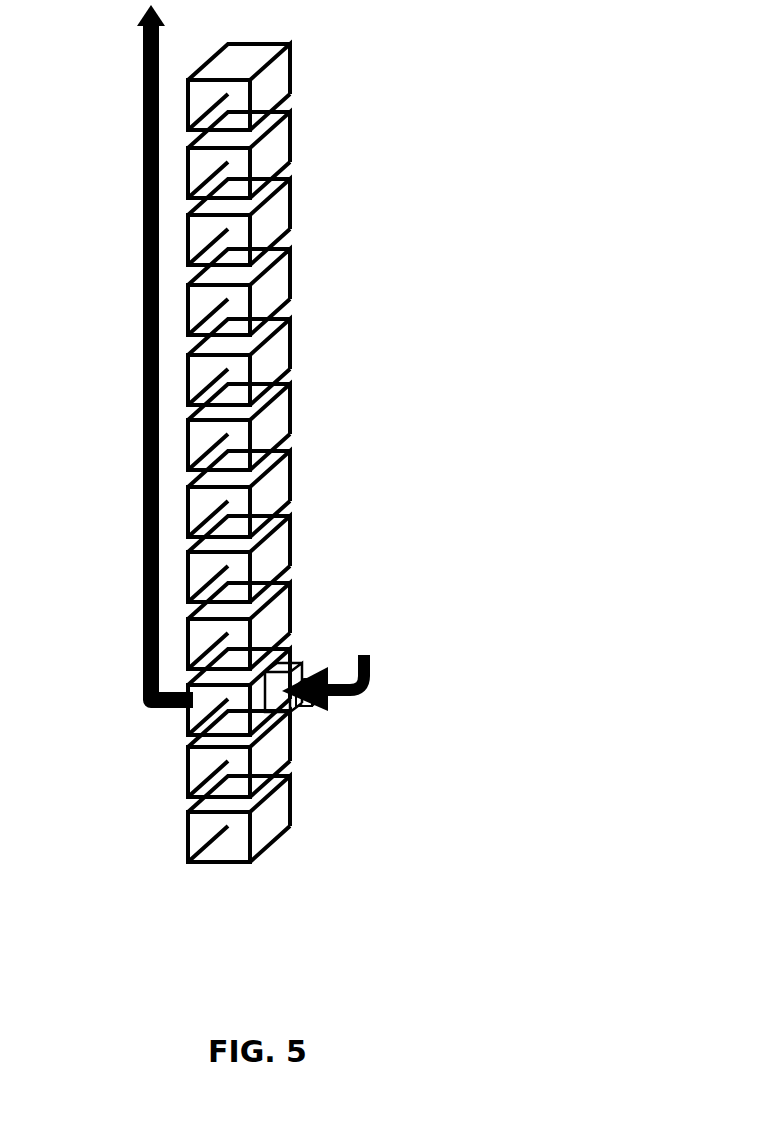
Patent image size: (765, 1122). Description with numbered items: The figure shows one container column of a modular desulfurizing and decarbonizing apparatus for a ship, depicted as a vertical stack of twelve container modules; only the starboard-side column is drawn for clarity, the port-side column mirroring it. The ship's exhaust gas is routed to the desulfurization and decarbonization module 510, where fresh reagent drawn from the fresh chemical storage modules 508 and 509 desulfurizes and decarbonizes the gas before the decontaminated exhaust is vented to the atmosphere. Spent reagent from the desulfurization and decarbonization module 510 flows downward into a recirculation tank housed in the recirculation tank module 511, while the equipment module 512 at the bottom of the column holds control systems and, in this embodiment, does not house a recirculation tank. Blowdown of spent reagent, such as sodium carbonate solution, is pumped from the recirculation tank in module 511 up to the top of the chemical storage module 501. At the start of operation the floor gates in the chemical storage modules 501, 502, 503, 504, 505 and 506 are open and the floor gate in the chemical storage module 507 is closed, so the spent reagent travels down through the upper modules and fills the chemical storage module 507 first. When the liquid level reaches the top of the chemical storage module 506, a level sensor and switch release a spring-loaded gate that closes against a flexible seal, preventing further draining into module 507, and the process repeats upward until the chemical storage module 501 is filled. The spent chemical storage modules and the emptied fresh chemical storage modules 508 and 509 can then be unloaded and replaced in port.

The chemical storage module 501 is at (302, 66).
The chemical storage module 502 is at (302, 141).
The chemical storage module 503 is at (302, 208).
The chemical storage module 504 is at (302, 278).
The chemical storage module 505 is at (302, 348).
The chemical storage module 506 is at (302, 413).
The chemical storage module 507 is at (302, 480).
The chemical storage module 508 is at (302, 545).
The chemical storage module 509 is at (302, 612).
The desulfurization and decarbonization module 510 is at (208, 708).
The recirculation tank module 511 is at (302, 740).
The equipment module 512 is at (302, 810).